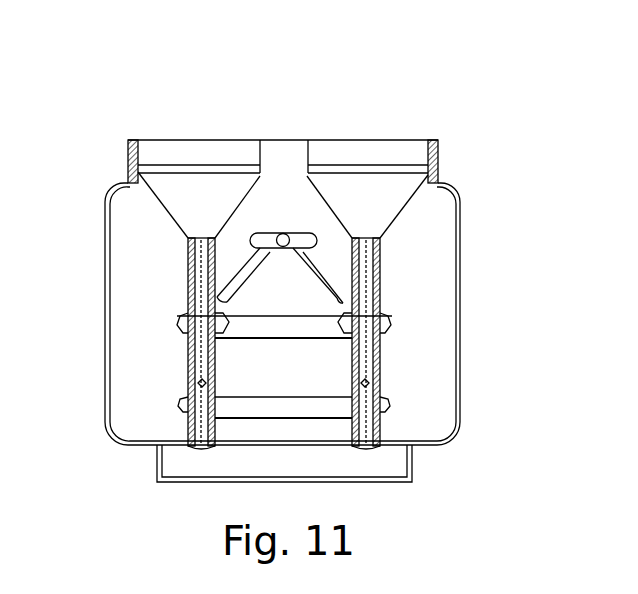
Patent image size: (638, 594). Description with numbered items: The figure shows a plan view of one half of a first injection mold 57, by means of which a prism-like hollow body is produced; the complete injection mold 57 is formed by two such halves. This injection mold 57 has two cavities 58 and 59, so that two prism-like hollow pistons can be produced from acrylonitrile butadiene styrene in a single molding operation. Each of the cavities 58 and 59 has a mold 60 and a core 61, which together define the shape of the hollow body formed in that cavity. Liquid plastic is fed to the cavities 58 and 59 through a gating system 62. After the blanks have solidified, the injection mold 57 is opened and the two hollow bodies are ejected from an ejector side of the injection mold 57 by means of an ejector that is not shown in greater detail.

The injection mold 57 is at (437, 321).
The cavity 58 is at (188, 360).
The cavity 59 is at (380, 393).
The mold 60 is at (383, 315).
The core 61 is at (380, 265).
The gating system 62 is at (290, 232).